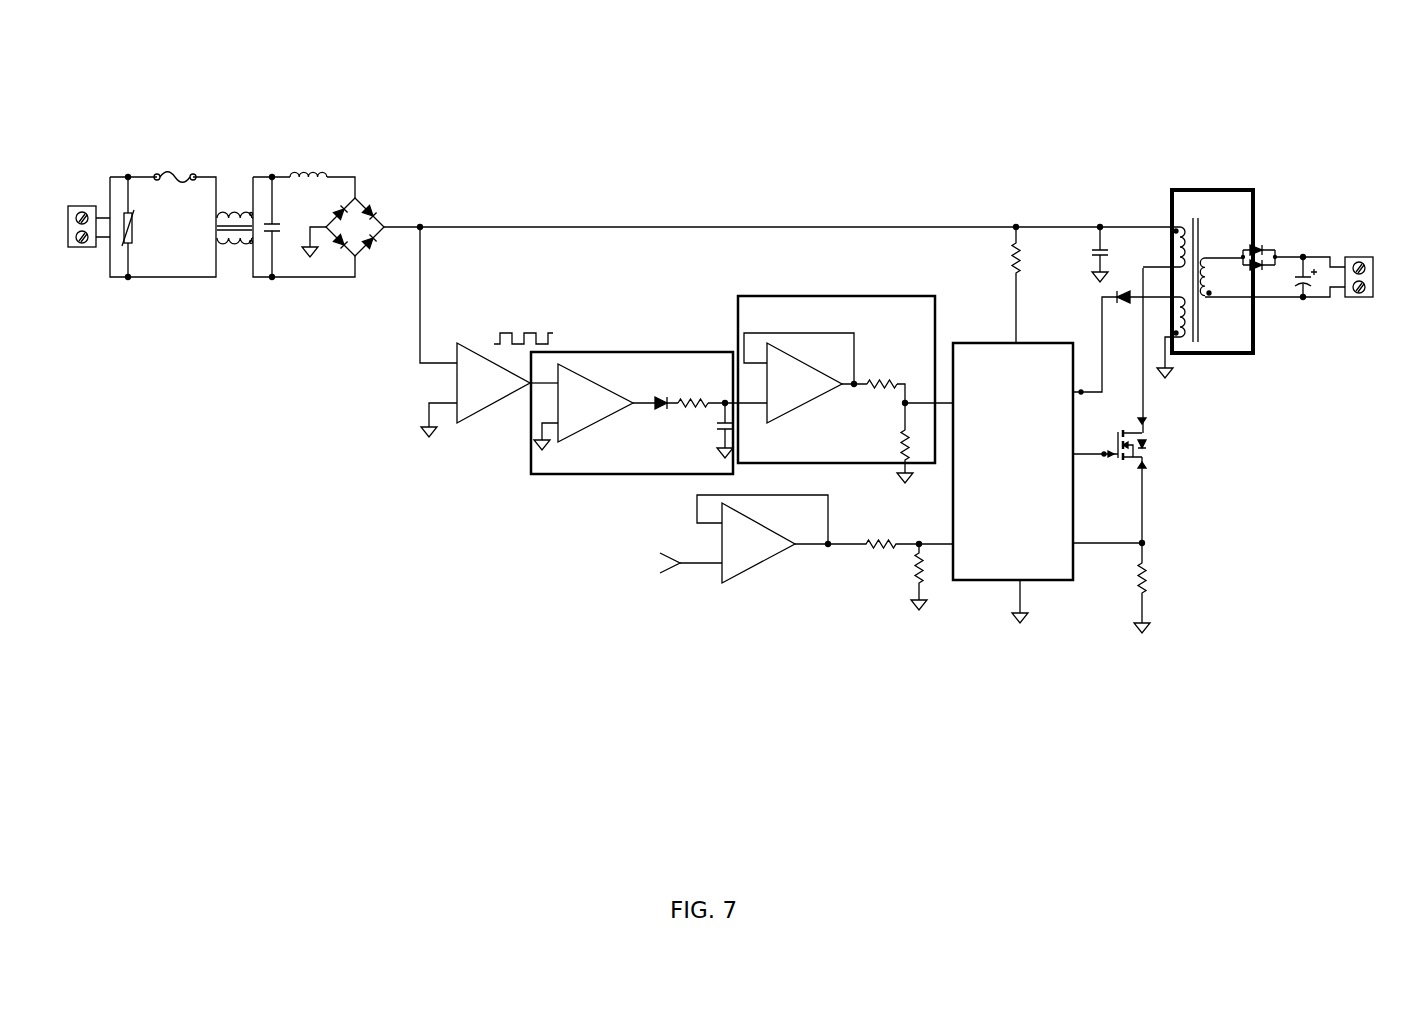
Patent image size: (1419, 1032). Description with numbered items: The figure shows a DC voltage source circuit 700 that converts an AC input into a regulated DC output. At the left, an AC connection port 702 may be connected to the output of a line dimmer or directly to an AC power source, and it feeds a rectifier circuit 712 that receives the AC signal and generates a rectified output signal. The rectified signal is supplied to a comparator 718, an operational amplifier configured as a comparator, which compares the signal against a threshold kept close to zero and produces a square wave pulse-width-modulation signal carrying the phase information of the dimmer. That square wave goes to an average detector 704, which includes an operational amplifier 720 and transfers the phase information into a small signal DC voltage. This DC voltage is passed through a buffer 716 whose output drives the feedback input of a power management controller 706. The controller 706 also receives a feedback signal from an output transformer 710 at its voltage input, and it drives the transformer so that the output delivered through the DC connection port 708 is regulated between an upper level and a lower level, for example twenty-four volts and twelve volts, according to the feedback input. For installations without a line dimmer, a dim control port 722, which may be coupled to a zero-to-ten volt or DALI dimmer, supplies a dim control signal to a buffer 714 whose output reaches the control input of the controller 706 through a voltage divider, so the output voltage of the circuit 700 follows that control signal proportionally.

The DC voltage source circuit 700 is at (115, 74).
The AC connection port 702 is at (79, 246).
The average detector 704 is at (582, 449).
The power management controller 706 is at (970, 582).
The DC connection port 708 is at (1365, 257).
The output transformer 710 is at (1170, 203).
The rectifier circuit 712 is at (358, 198).
The buffer 714 is at (750, 567).
The buffer 716 is at (737, 321).
The comparator 718 is at (472, 350).
The operational amplifier 720 is at (587, 425).
The dim control port 722 is at (680, 563).